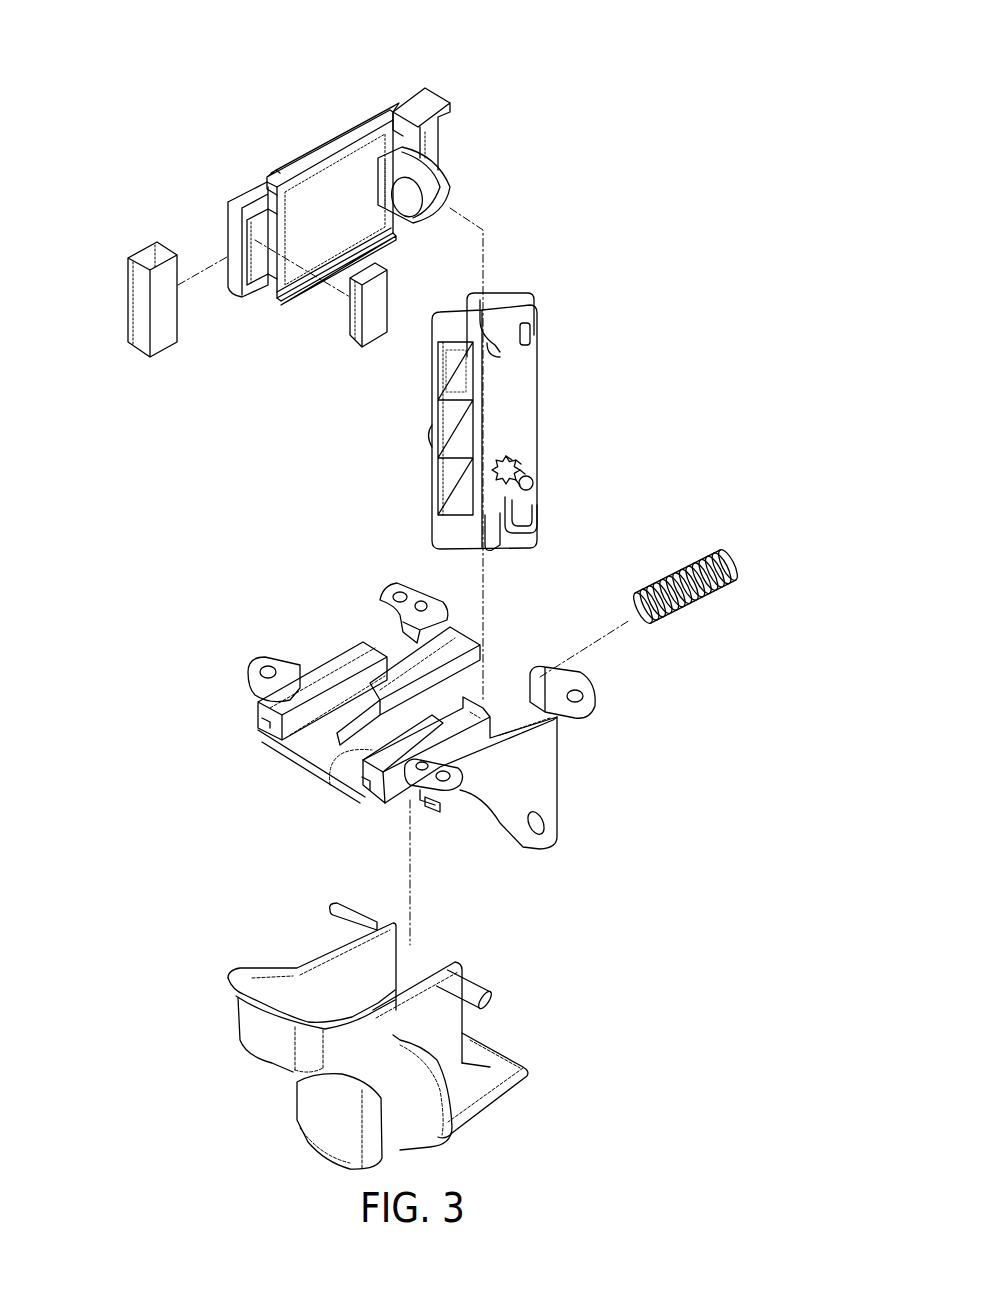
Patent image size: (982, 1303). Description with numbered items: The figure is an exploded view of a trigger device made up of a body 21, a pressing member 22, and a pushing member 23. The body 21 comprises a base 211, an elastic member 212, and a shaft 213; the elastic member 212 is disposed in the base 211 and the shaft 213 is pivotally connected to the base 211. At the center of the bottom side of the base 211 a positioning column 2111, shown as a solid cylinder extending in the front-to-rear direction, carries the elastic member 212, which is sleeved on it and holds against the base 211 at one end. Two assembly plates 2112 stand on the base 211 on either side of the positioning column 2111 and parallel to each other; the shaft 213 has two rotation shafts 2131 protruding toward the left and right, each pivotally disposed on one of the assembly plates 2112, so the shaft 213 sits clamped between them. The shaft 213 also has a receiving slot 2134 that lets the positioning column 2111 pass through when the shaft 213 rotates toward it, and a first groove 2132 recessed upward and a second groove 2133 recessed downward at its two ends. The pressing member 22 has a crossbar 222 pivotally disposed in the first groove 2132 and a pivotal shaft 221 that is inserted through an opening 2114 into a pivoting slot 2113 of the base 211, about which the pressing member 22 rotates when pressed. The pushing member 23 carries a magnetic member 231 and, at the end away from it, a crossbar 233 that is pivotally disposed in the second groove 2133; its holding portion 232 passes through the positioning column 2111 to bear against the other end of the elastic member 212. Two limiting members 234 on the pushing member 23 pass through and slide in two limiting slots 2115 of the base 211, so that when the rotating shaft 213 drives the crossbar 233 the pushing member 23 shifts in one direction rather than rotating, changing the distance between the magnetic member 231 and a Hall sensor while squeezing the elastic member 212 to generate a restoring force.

The pushing member 23 is at (320, 375).
The limiting member 234 is at (360, 122).
The crossbar 233 is at (435, 147).
The holding portion 232 is at (448, 195).
The magnetic member 231 is at (353, 325).
The body 21 is at (330, 490).
The shaft 213 is at (474, 421).
The second groove 2133 is at (507, 348).
The receiving slot 2134 is at (463, 395).
The rotation shaft 2131 is at (540, 488).
The first groove 2132 is at (507, 513).
The base 211 is at (433, 707).
The assembly plate 2112 is at (400, 713).
The limiting slot 2115 is at (267, 734).
The positioning column 2111 is at (342, 752).
The pivoting slot 2113 is at (472, 780).
The opening 2114 is at (432, 807).
The elastic member 212 is at (643, 630).
The pressing member 22 is at (400, 984).
The pivotal shaft 221 is at (500, 1003).
The crossbar 222 is at (480, 1050).